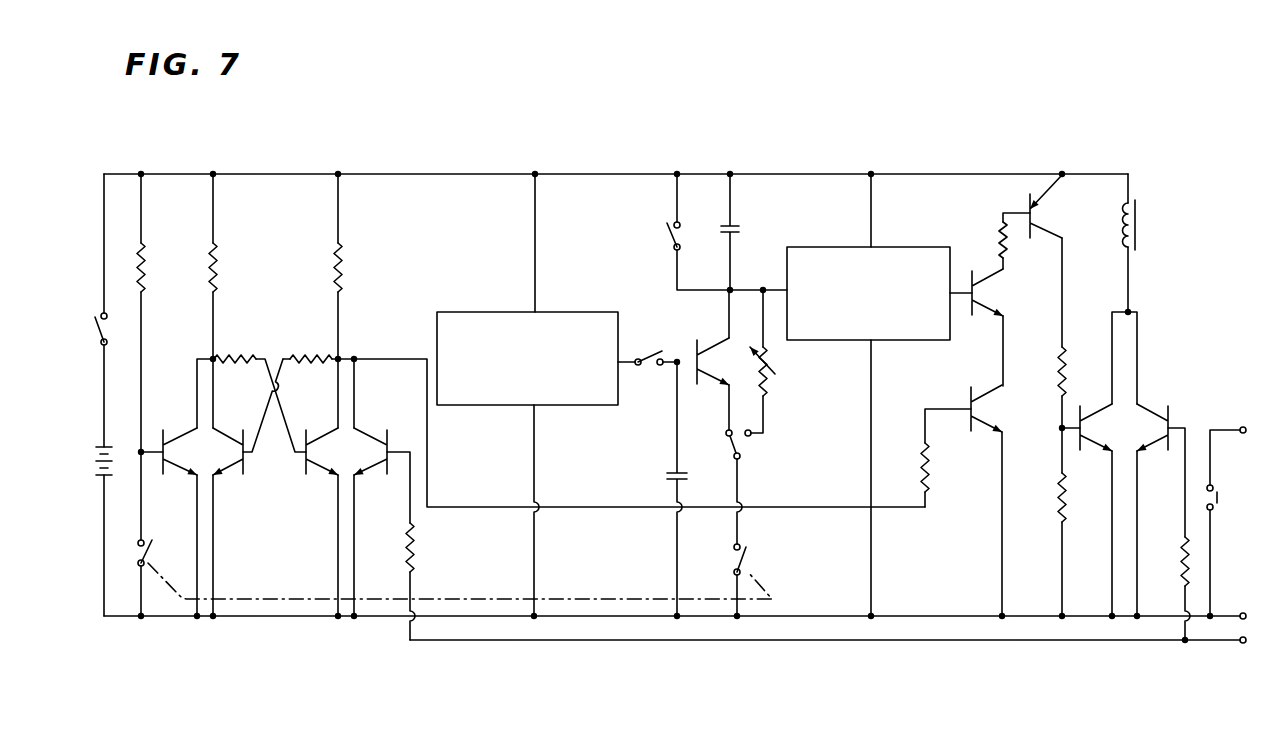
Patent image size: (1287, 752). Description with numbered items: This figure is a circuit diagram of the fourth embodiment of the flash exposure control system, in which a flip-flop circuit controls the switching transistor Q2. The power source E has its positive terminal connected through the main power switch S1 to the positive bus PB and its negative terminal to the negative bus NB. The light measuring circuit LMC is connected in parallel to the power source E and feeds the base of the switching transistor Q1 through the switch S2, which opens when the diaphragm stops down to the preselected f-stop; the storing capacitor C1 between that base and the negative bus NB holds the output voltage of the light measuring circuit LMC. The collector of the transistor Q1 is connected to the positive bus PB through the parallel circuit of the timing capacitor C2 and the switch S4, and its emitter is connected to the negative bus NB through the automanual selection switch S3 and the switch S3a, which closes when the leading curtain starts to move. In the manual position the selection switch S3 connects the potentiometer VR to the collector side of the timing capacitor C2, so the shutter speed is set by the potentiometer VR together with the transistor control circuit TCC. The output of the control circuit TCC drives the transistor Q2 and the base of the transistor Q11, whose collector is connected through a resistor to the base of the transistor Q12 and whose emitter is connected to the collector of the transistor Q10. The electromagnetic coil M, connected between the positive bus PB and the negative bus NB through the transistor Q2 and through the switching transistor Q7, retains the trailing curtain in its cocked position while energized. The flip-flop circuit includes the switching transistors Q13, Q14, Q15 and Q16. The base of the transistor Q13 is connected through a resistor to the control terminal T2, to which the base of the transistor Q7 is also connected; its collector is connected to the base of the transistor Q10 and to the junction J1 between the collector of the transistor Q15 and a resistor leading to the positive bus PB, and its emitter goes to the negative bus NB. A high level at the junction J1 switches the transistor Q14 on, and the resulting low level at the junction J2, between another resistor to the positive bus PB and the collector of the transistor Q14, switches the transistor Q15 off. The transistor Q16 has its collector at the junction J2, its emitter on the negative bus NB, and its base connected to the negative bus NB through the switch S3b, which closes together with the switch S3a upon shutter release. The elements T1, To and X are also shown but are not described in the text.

The positive bus PB is at (488, 174).
The negative bus NB is at (305, 618).
The main power switch S1 is at (110, 322).
The power source E is at (118, 465).
The switch S3b is at (137, 553).
The junction J2 is at (211, 357).
The junction J1 is at (343, 357).
The switching transistor Q16 is at (177, 468).
The switching transistor Q14 is at (227, 467).
The switching transistor Q15 is at (315, 468).
The switching transistor Q13 is at (368, 468).
The light measuring circuit LMC is at (490, 312).
The switch S2 is at (650, 384).
The switching transistor Q1 is at (698, 343).
The storing capacitor C1 is at (667, 475).
The switch S4 is at (668, 228).
The timing capacitor C2 is at (742, 232).
The potentiometer VR is at (770, 368).
The automanual selection switch S3 is at (740, 448).
The switch S3a is at (750, 550).
The transistor control circuit TCC is at (833, 247).
The transistor Q11 is at (988, 276).
The transistor Q12 is at (1040, 232).
The electromagnetic coil M is at (1140, 222).
The transistor Q10 is at (983, 424).
The switching transistor Q2 is at (1090, 445).
The switching transistor Q7 is at (1150, 400).
The terminal T1 is at (1248, 451).
The switch X is at (1222, 497).
The terminal To is at (1263, 617).
The control terminal T2 is at (848, 647).